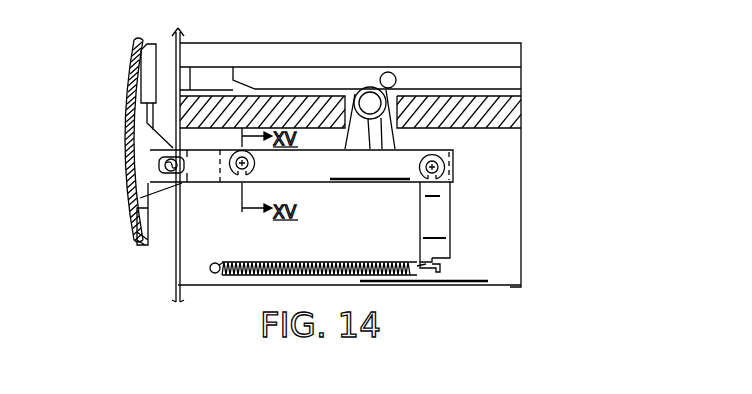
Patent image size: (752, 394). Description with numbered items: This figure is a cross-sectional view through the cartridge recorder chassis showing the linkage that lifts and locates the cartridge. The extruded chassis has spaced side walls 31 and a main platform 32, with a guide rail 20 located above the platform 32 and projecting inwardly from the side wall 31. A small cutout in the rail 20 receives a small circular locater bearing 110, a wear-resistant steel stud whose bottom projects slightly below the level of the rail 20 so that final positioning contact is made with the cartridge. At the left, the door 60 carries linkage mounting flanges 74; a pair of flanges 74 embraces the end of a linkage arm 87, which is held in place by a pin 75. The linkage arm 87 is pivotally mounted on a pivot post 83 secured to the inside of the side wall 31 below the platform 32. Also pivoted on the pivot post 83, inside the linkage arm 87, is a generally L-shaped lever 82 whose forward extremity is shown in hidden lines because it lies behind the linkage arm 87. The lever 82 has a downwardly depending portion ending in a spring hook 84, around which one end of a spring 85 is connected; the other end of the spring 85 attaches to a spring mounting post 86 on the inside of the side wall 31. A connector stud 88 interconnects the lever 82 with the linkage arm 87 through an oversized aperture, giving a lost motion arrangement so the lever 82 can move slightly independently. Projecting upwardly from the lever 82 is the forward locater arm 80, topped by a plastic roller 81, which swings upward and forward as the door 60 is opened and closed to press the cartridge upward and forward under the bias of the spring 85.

The guide rail 20 is at (458, 74).
The side wall 31 is at (497, 262).
The main platform 32 is at (473, 128).
The door 60 is at (127, 122).
The linkage mounting flange 74 is at (152, 190).
The pin 75 is at (177, 158).
The forward locater arm 80 is at (372, 133).
The plastic roller 81 is at (366, 87).
The lever 82 is at (445, 208).
The pivot post 83 is at (443, 170).
The spring hook 84 is at (431, 276).
The spring 85 is at (355, 260).
The spring mounting post 86 is at (214, 277).
The linkage arm 87 is at (313, 173).
The connector stud 88 is at (233, 170).
The locater bearing 110 is at (392, 71).